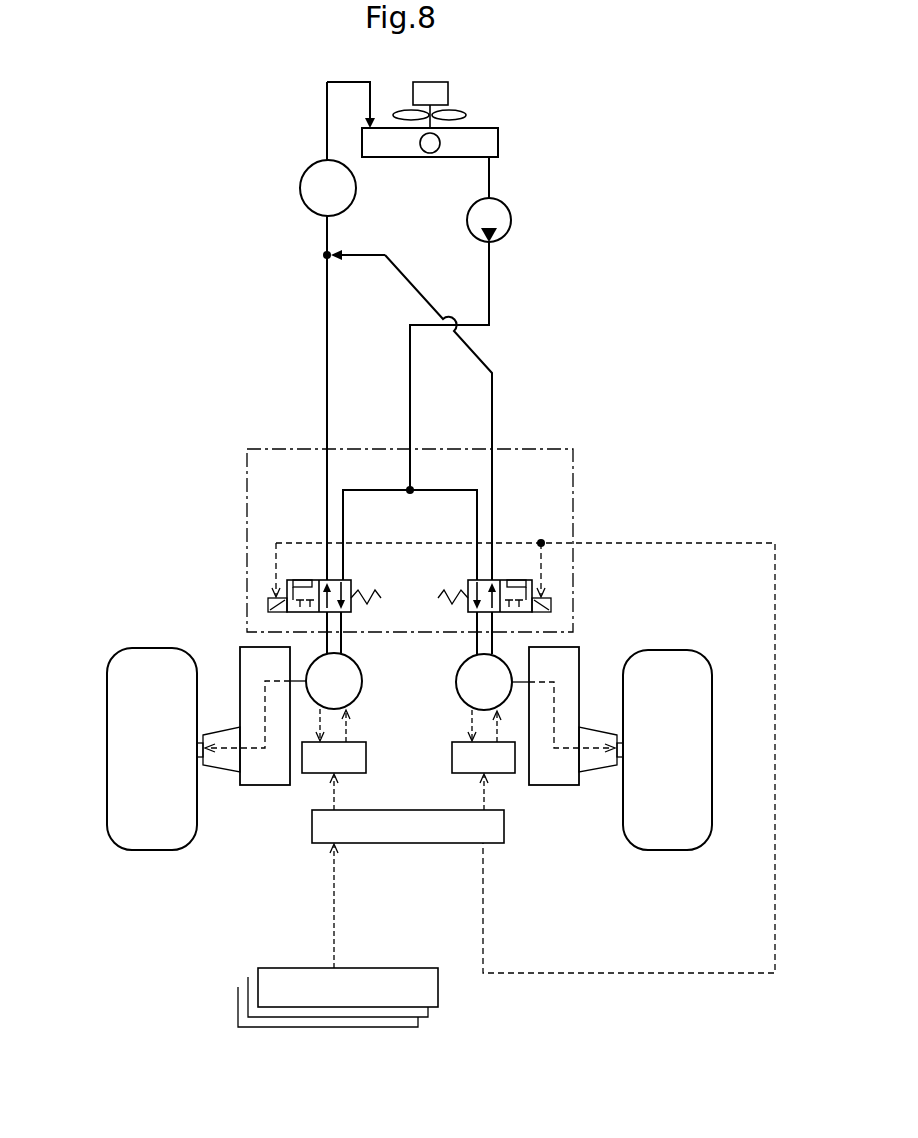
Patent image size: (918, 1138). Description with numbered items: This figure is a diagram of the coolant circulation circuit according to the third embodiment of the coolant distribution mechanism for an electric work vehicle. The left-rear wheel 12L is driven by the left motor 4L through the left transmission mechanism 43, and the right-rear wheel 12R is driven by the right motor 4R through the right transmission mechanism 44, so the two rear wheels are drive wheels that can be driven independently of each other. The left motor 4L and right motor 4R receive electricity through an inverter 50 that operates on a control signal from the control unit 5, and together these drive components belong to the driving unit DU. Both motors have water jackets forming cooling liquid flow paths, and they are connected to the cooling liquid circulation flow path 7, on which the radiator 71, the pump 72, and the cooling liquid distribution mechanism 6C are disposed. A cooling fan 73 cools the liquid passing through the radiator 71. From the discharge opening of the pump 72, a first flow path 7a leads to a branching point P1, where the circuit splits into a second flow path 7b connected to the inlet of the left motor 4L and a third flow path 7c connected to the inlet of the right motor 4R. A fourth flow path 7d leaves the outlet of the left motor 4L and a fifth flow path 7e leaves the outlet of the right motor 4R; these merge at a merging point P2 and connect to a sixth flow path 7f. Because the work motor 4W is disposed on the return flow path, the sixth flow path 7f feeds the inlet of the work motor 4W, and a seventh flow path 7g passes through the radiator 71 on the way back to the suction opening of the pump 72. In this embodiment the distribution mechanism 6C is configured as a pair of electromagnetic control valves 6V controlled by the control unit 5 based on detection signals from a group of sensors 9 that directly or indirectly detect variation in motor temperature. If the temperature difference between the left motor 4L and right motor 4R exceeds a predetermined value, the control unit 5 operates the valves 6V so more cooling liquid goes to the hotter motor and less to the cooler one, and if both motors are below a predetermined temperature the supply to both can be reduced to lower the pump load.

The cooling liquid circulation flow path 7 is at (320, 130).
The seventh flow path 7g is at (327, 147).
The work motor 4W is at (300, 188).
The sixth flow path 7f is at (327, 235).
The merging point P2 is at (325, 258).
The fourth flow path 7d is at (327, 397).
The cooling fan 73 is at (448, 92).
The radiator 71 is at (498, 143).
The pump 72 is at (511, 220).
The first flow path 7a is at (490, 305).
The fifth flow path 7e is at (492, 403).
The branching point P1 is at (411, 488).
The second flow path 7b is at (345, 520).
The third flow path 7c is at (492, 530).
The cooling liquid distribution mechanism 6C is at (247, 505).
The driving unit DU is at (216, 603).
The electromagnetic control valve 6V is at (303, 580).
The left motor 4L is at (362, 681).
The right motor 4R is at (456, 682).
The left transmission mechanism 43 is at (240, 681).
The right transmission mechanism 44 is at (556, 690).
The left-rear wheel 12L is at (108, 678).
The right-rear wheel 12R is at (668, 658).
The inverter 50 is at (366, 756).
The control unit 5 is at (312, 828).
The group of sensors 9 is at (258, 990).